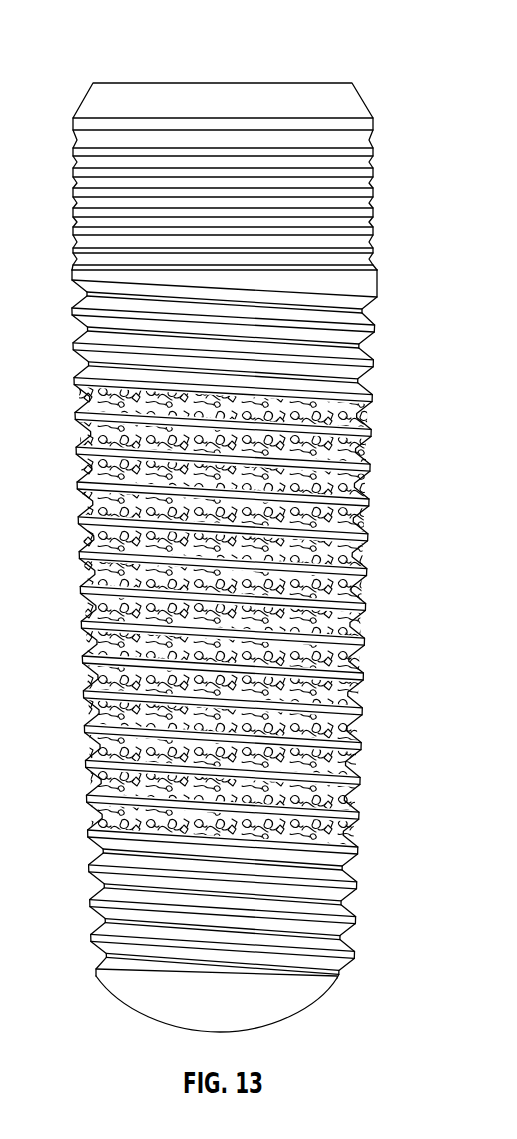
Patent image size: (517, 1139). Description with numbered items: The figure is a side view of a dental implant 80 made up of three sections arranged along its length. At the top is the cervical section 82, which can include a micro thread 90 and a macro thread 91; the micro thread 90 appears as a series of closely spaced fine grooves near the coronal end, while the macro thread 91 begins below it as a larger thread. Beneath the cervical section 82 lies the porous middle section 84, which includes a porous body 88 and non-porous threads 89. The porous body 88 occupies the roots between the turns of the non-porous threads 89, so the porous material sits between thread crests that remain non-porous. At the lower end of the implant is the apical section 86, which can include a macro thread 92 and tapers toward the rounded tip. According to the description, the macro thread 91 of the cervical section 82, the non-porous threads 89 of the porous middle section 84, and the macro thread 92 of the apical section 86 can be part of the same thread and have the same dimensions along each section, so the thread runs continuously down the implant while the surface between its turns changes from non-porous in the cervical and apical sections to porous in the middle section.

The dental implant 80 is at (94, 32).
The cervical section 82 is at (57, 225).
The porous middle section 84 is at (55, 577).
The apical section 86 is at (59, 917).
The porous body 88 is at (352, 657).
The non-porous threads 89 is at (366, 536).
The micro thread 90 is at (373, 178).
The macro thread 91 is at (373, 333).
The macro thread 92 is at (352, 888).